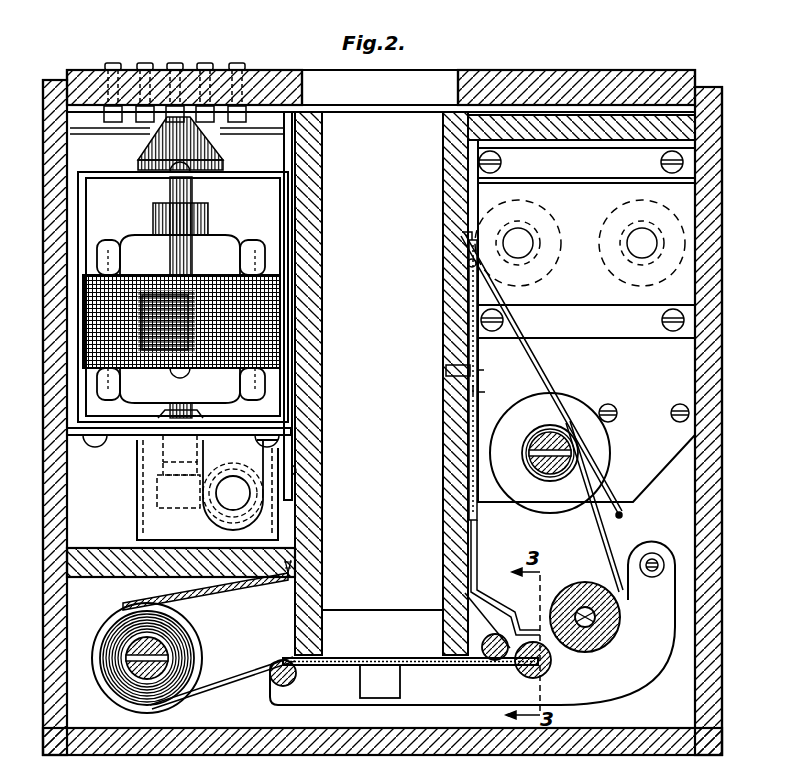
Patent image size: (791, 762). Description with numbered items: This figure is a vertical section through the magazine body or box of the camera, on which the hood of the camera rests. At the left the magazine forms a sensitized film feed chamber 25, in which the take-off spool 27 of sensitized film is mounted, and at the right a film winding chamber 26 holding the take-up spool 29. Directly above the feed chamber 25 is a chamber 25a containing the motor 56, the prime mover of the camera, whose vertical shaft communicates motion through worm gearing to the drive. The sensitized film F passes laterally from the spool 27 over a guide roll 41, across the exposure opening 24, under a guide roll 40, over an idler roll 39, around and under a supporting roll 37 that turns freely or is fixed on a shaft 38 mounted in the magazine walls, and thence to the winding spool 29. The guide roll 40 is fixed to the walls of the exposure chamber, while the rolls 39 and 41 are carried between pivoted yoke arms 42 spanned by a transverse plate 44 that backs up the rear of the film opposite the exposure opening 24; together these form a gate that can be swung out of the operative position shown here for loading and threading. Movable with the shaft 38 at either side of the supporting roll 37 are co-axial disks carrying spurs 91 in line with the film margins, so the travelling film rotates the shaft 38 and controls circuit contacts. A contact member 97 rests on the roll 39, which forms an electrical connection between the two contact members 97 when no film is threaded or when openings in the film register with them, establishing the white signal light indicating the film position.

The exposure opening 24 is at (345, 657).
The sensitized film feed chamber 25 is at (282, 603).
The motor chamber 25a is at (182, 487).
The film winding chamber 26 is at (675, 500).
The take-off spool 27 is at (192, 630).
The take-up spool 29 is at (597, 449).
The supporting roll 37 is at (612, 622).
The shaft 38 is at (575, 592).
The idler roll 39 is at (548, 668).
The guide roll 40 is at (493, 662).
The guide roll 41 is at (270, 680).
The yoke arms 42 is at (632, 680).
The transverse plate 44 is at (425, 668).
The motor 56 is at (225, 240).
The spurs 91 is at (548, 600).
The contact members 97 is at (492, 597).
The sensitized film F is at (255, 668).